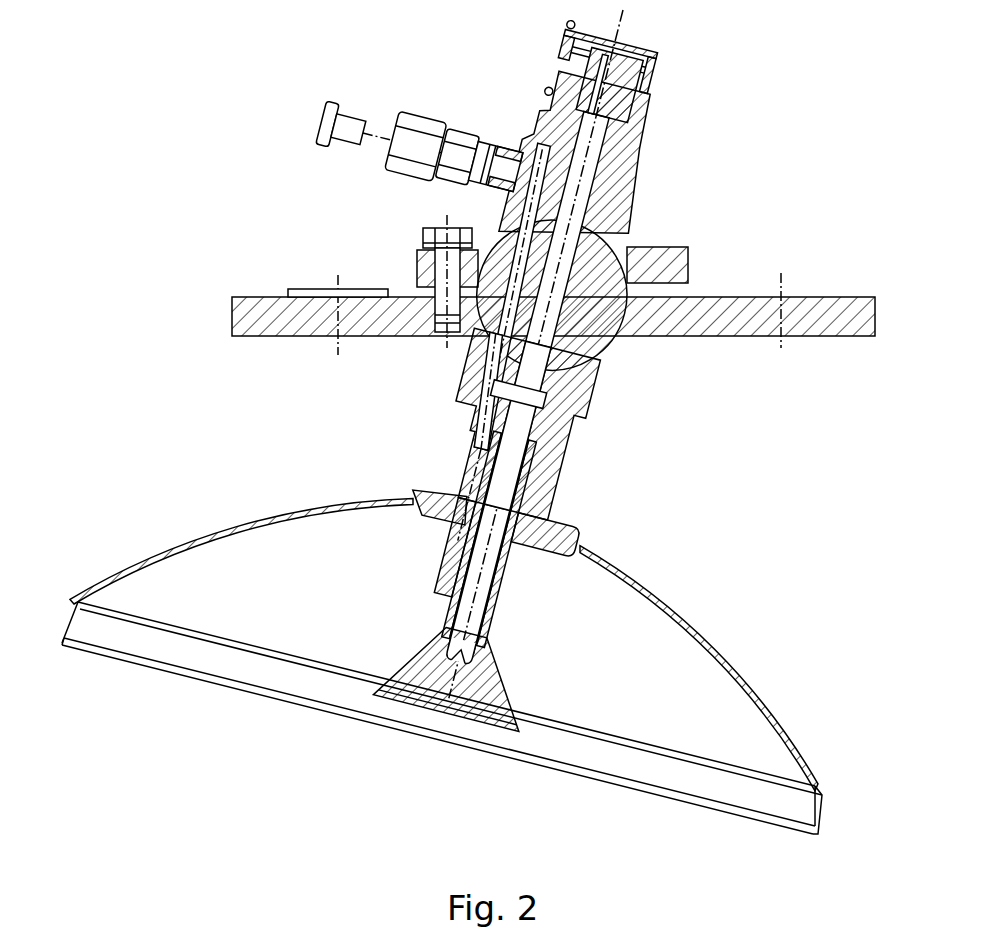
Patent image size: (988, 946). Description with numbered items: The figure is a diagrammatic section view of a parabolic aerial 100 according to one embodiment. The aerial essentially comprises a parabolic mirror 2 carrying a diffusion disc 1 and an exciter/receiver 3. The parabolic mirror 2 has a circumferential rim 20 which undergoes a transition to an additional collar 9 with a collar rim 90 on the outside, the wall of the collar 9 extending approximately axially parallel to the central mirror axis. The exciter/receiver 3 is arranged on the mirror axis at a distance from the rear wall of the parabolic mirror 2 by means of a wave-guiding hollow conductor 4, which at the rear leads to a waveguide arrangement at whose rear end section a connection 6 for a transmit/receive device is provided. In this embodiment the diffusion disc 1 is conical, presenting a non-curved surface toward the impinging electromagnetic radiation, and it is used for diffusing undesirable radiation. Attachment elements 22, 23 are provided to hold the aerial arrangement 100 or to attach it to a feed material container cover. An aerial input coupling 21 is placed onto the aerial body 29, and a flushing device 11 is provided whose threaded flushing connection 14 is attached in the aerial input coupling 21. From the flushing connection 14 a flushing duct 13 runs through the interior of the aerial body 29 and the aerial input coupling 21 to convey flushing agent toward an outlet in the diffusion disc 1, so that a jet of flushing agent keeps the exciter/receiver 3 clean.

The parabolic aerial 100 is at (268, 72).
The flushing device 11 is at (419, 114).
The flushing connection 14 is at (405, 160).
The connection 6 is at (648, 93).
The aerial input coupling 21 is at (686, 205).
The attachment element 22 is at (425, 232).
The attachment element 23 is at (300, 288).
The aerial body 29 is at (458, 420).
The flushing duct 13 is at (470, 462).
The diffusion disc 1 is at (570, 530).
The hollow conductor 4 is at (495, 608).
The exciter/receiver 3 is at (500, 675).
The parabolic mirror 2 is at (660, 600).
The rim of the parabolic mirror 20 is at (608, 735).
The collar rim 90 is at (608, 785).
The collar 9 is at (823, 815).